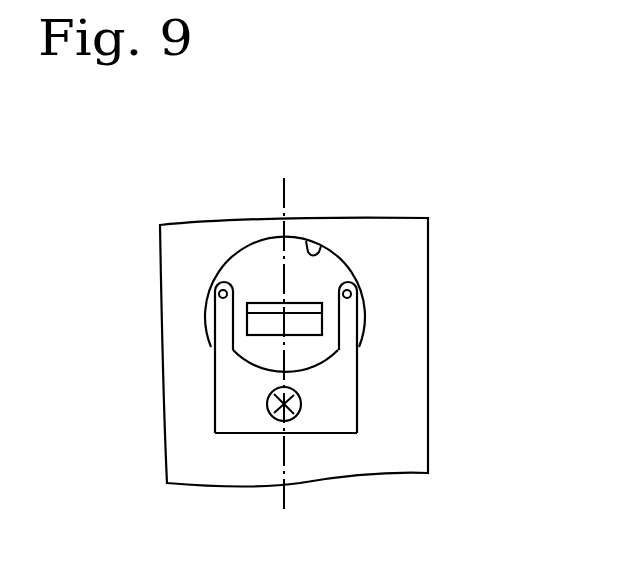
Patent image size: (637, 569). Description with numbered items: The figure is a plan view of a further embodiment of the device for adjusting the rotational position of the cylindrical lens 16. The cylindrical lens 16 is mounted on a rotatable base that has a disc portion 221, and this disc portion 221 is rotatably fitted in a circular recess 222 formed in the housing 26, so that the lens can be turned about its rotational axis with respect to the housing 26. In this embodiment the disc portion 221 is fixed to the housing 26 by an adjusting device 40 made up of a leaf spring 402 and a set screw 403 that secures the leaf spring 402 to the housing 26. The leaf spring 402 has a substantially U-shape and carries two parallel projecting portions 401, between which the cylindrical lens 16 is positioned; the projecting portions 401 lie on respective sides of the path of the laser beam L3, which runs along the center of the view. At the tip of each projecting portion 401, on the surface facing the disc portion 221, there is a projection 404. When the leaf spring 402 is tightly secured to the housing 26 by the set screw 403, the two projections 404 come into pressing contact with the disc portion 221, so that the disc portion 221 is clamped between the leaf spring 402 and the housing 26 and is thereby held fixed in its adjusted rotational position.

The laser beam L3 is at (282, 197).
The cylindrical lens 16 is at (307, 317).
The housing 26 is at (413, 281).
The adjusting device 40 is at (297, 366).
The disc portion 221 is at (234, 268).
The circular recess 222 is at (320, 243).
The projecting portions 401 is at (350, 320).
The leaf spring 402 is at (222, 410).
The set screw 403 is at (298, 413).
The projection 404 is at (219, 298).